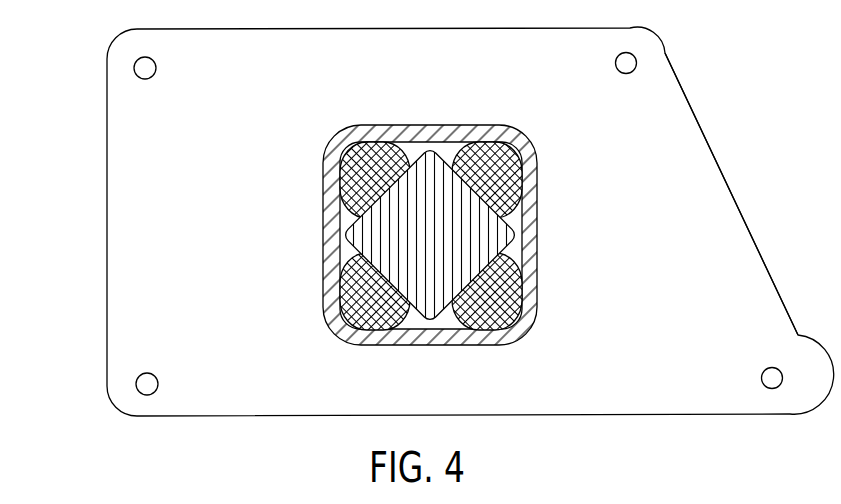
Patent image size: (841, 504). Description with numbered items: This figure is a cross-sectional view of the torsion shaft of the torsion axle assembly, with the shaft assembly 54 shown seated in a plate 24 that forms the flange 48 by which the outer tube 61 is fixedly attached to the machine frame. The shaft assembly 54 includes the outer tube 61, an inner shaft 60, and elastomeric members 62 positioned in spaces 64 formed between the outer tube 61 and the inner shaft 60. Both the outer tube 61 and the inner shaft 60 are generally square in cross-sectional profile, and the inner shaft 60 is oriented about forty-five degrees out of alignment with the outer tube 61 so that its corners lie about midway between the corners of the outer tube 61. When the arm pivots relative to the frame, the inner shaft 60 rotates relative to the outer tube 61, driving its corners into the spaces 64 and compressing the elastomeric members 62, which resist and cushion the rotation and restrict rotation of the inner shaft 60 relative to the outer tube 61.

The mounting plate 24 is at (88, 286).
The flange 48 is at (707, 170).
The shaft assembly 54 is at (385, 237).
The inner shaft 60 is at (378, 238).
The outer tube 61 is at (453, 237).
The elastomeric members 62 is at (358, 160).
The spaces 64 is at (410, 147).